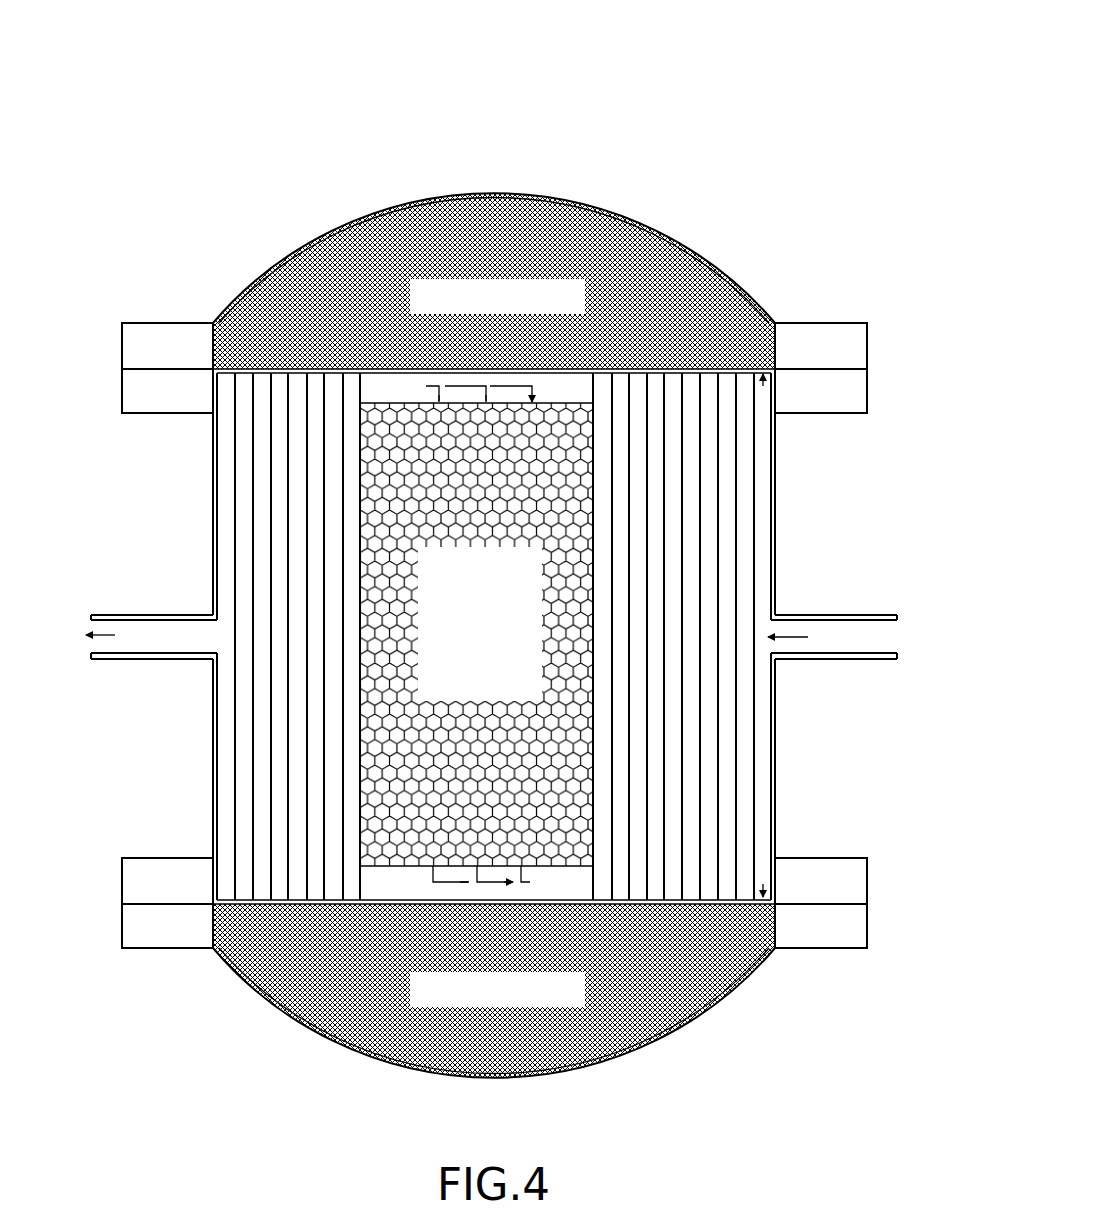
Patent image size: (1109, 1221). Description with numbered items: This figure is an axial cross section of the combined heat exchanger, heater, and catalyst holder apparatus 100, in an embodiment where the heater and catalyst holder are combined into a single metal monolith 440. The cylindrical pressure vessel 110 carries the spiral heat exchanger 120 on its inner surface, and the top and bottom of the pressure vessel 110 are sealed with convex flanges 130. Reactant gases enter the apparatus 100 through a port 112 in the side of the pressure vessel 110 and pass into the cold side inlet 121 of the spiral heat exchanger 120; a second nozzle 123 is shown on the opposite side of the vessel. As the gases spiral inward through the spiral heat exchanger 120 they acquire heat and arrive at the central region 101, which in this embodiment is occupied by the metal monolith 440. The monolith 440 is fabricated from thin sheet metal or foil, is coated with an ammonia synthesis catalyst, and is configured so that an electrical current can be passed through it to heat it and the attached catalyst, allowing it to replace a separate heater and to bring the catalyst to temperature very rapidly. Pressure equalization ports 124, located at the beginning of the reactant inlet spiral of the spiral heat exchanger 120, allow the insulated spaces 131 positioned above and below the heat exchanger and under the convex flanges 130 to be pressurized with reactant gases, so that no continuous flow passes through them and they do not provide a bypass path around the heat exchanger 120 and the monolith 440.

The apparatus 100 is at (494, 484).
The central region 101 is at (243, 288).
The pressure vessel 110 is at (777, 474).
The port 112 is at (873, 646).
The spiral heat exchanger 120 is at (253, 742).
The cold side inlet 121 is at (777, 632).
The left nozzle 123 is at (210, 632).
The pressure equalization ports 124 is at (757, 305).
The convex flanges 130 is at (777, 322).
The insulated spaces 131 is at (362, 234).
The metal monolith 440 is at (400, 777).